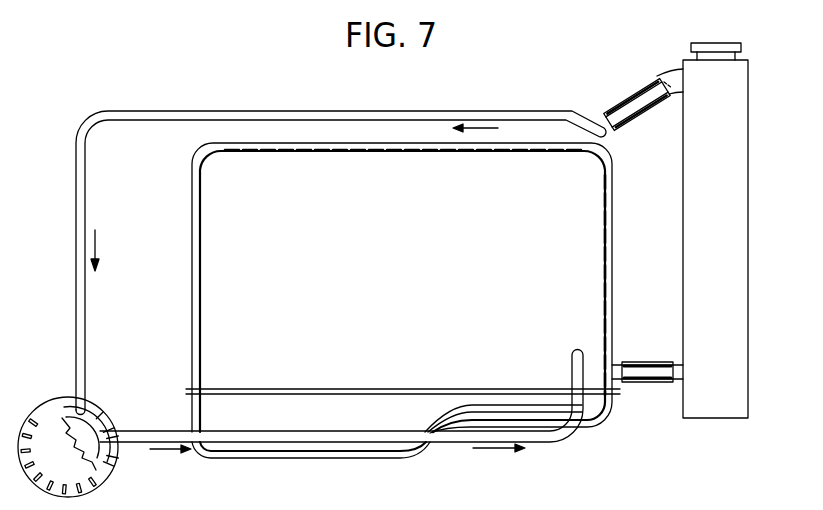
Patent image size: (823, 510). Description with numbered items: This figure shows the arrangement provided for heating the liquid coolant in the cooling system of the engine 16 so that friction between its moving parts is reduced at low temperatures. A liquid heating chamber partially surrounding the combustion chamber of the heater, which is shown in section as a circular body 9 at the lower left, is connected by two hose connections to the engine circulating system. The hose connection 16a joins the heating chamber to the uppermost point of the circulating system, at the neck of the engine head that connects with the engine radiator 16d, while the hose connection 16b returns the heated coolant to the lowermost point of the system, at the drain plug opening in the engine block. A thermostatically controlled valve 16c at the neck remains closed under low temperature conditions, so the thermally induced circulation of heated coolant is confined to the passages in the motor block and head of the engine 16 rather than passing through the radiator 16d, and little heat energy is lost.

The pump 9 is at (65, 399).
The engine 16 is at (191, 232).
The hose connection 16a is at (516, 111).
The hose connection 16b is at (555, 441).
The thermostatically controlled valve 16c is at (667, 80).
The engine radiator 16d is at (683, 232).